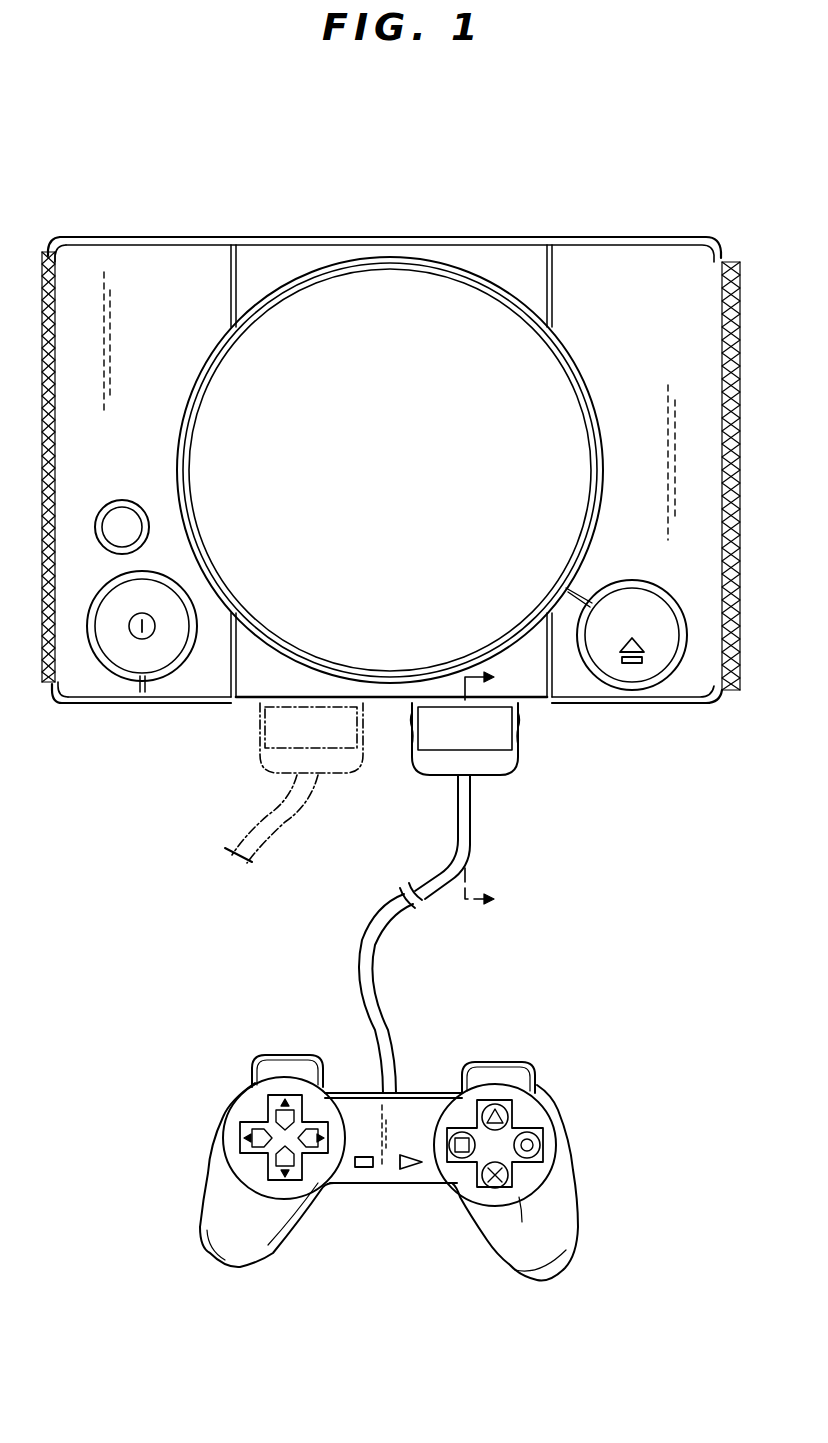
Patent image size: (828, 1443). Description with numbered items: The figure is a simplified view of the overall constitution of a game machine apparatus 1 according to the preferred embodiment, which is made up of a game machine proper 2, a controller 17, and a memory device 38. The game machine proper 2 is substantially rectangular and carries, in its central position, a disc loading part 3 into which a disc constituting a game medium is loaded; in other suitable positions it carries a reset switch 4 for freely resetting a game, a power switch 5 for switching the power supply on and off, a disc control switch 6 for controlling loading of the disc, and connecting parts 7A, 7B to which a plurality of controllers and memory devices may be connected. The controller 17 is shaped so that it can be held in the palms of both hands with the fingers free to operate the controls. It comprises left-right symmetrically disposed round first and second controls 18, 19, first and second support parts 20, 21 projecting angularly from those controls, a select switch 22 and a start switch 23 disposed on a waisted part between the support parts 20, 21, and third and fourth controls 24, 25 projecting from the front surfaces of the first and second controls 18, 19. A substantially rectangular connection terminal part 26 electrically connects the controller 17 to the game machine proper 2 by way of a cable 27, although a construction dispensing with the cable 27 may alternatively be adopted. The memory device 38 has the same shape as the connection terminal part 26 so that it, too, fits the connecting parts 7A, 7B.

The game machine apparatus 1 is at (452, 224).
The game machine proper 2 is at (642, 240).
The disc loading part 3 is at (547, 390).
The reset switch 4 is at (112, 527).
The power switch 5 is at (108, 618).
The disc control switch 6 is at (647, 610).
The connecting part 7A is at (497, 692).
The connecting part 7B is at (302, 688).
The controller 17 is at (566, 1102).
The first control 18 is at (268, 1122).
The second control 19 is at (505, 1152).
The first support part 20 is at (205, 1250).
The second support part 21 is at (577, 1247).
The select switch 22 is at (362, 1168).
The start switch 23 is at (411, 1168).
The third control 24 is at (276, 1057).
The fourth control 25 is at (493, 1062).
The connection terminal part 26 is at (500, 784).
The cable 27 is at (385, 980).
The memory device 38 is at (520, 763).